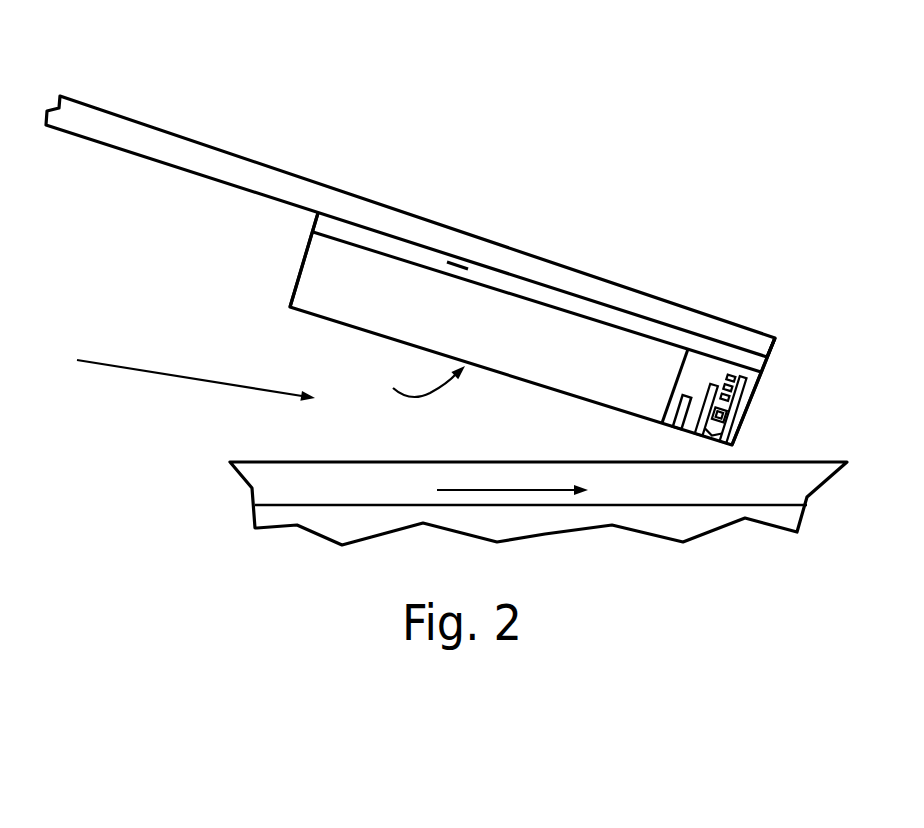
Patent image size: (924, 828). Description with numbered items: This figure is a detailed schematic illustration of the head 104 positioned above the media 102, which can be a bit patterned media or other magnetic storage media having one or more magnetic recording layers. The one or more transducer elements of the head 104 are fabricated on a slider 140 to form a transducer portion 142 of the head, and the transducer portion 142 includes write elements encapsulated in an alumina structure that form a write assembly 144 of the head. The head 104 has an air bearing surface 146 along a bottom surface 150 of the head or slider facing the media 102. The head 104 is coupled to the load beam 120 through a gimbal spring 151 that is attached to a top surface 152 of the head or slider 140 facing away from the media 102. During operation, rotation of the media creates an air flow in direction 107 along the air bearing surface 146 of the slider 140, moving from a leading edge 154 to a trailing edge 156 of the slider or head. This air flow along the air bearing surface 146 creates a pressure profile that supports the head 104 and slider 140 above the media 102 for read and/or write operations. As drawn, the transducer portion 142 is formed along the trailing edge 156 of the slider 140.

The media 102 is at (776, 494).
The head 104 is at (461, 270).
The direction of air flow 107 is at (512, 488).
The load beam 120 is at (340, 203).
The slider 140 is at (527, 325).
The transducer portion 142 is at (775, 376).
The write assembly 144 is at (750, 368).
The air bearing surface 146 is at (410, 380).
The bottom surface 150 is at (583, 400).
The gimbal spring 151 is at (460, 265).
The top surface 152 is at (597, 317).
The leading edge 154 is at (302, 262).
The trailing edge 156 is at (750, 400).